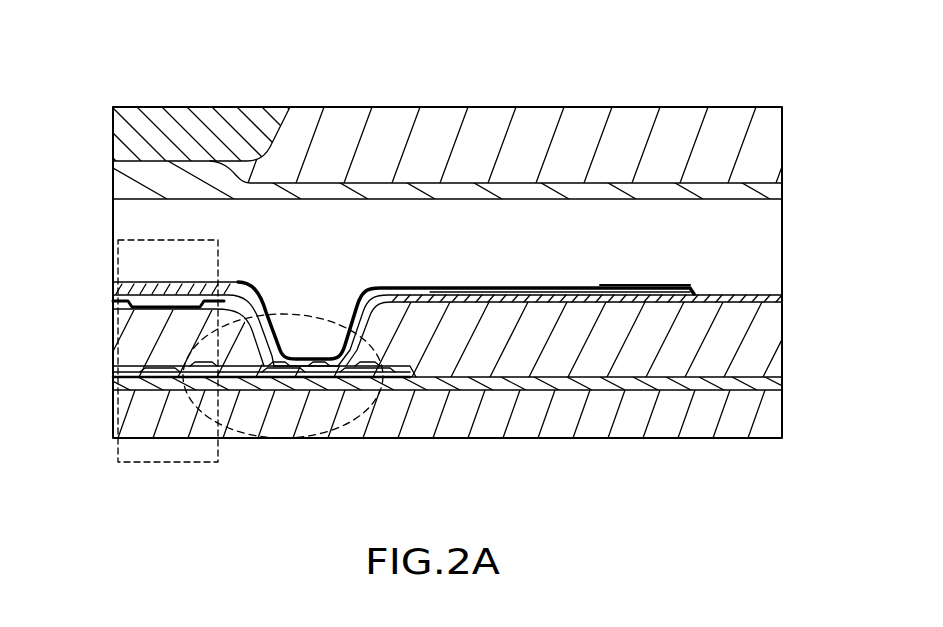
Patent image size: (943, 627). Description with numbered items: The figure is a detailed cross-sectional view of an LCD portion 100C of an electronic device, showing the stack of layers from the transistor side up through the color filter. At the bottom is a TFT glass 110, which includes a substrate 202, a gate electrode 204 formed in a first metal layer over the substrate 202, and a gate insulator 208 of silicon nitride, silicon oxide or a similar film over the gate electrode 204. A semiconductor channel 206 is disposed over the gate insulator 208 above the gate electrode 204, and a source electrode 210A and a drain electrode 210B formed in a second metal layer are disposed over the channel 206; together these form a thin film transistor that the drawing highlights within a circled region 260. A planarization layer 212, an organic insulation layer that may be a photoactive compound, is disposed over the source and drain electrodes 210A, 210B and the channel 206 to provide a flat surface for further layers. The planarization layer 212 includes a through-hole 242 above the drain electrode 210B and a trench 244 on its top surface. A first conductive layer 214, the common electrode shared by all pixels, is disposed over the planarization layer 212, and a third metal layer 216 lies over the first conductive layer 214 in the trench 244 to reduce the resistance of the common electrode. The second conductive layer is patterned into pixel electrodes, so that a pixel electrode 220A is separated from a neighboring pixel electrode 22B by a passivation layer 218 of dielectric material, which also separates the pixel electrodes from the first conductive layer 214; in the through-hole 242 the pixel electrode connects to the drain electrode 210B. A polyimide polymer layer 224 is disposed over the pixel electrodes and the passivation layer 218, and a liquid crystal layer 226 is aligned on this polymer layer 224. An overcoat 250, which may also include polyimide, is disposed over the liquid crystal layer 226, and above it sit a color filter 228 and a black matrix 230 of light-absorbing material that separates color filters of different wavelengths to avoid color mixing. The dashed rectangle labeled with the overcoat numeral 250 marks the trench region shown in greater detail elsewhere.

The LCD portion 100C is at (112, 82).
The black matrix 230 is at (243, 107).
The color filter 228 is at (543, 163).
The overcoat 250 is at (125, 183).
The liquid crystal layer 226 is at (312, 258).
The third metal layer 216 is at (163, 294).
The first conductive layer 214 is at (128, 303).
The trench 244 is at (146, 309).
The pixel electrode 220A is at (424, 289).
The passivation layer 218 is at (545, 289).
The pixel electrode 22B is at (637, 285).
The polymer layer 224 is at (727, 295).
The through-hole 242 is at (313, 358).
The planarization layer 212 is at (551, 360).
The TFT glass 110 is at (97, 368).
The channel 206 is at (313, 372).
The gate electrode 204 is at (233, 390).
The source electrode 210A is at (146, 376).
The drain electrode 210B is at (283, 372).
The circled region 260 is at (367, 398).
The gate insulator 208 is at (647, 391).
The substrate 202 is at (462, 428).